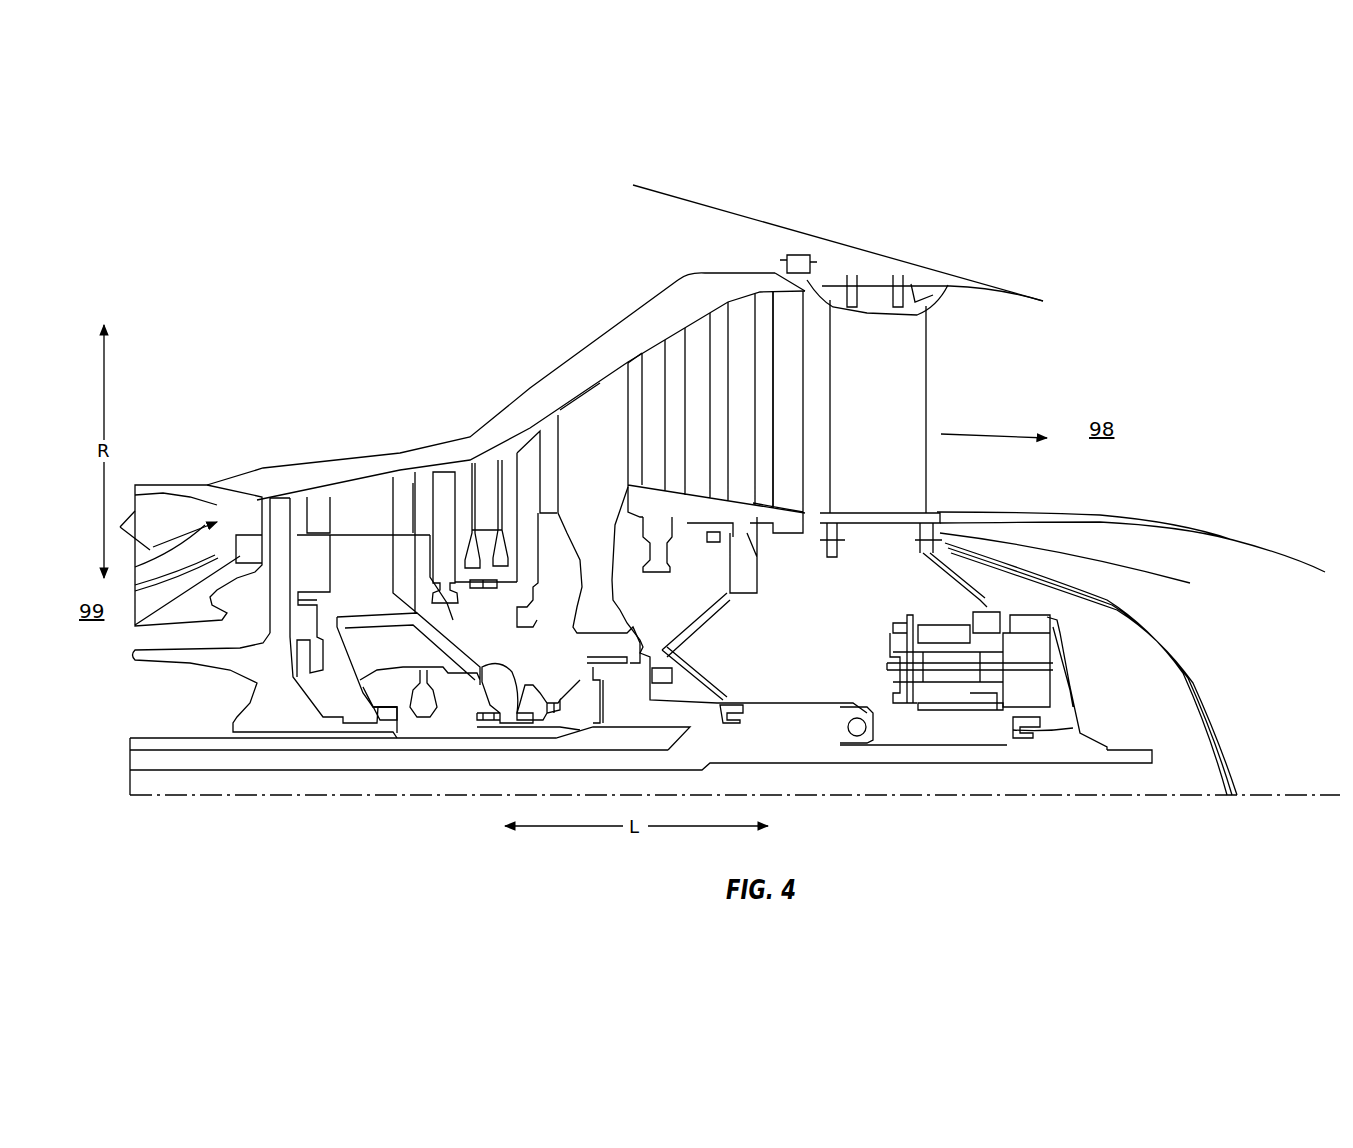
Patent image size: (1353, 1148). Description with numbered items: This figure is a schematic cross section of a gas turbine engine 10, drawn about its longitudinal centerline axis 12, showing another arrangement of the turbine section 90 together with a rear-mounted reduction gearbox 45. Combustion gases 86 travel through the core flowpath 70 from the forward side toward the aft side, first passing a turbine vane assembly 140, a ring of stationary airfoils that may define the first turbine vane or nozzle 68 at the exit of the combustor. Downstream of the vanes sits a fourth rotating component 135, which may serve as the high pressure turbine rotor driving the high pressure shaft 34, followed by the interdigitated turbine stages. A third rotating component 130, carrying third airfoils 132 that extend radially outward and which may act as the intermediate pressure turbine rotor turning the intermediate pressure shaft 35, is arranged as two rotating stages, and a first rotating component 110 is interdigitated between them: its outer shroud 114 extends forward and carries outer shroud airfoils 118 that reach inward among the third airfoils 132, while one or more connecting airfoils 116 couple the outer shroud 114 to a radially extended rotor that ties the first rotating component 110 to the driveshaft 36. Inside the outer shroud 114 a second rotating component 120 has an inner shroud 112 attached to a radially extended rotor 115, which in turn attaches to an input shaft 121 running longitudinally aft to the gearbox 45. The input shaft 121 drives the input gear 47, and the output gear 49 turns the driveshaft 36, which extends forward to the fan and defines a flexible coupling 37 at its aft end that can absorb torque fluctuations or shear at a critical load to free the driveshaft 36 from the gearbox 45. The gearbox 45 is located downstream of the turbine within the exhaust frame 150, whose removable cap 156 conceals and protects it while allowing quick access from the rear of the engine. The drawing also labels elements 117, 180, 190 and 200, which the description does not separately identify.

The gas turbine engine 10 is at (926, 184).
The longitudinal centerline axis 12 is at (1115, 797).
The high pressure shaft 34 is at (160, 653).
The intermediate pressure shaft 35 is at (132, 742).
The driveshaft 36 is at (133, 762).
The flexible coupling 37 is at (1073, 683).
The gearbox 45 is at (937, 630).
The input gear 47 is at (897, 703).
The output gear 49 is at (1020, 633).
The first turbine vane 68 is at (236, 490).
The core flowpath 70 is at (470, 473).
The combustion gases 86 is at (155, 546).
The turbine section 90 is at (602, 251).
The first rotating component 110 is at (568, 398).
The inner shroud 112 is at (680, 548).
The outer shroud 114 is at (630, 350).
The radially extended rotor 115 is at (693, 620).
The connecting airfoils 116 is at (580, 408).
The turbine vane 117 is at (738, 322).
The outer shroud airfoils 118 is at (481, 457).
The second rotating component 120 is at (748, 568).
The input shaft 121 is at (753, 700).
The third rotating component 130 is at (433, 465).
The third airfoils 132 is at (450, 477).
The fourth rotating component 135 is at (277, 492).
The turbine vane assembly 140 is at (240, 490).
The exhaust frame 150 is at (915, 375).
The cap 156 is at (1173, 643).
The rotor hub 180 is at (481, 703).
The rotor disk 190 is at (477, 722).
The bearing 200 is at (750, 715).